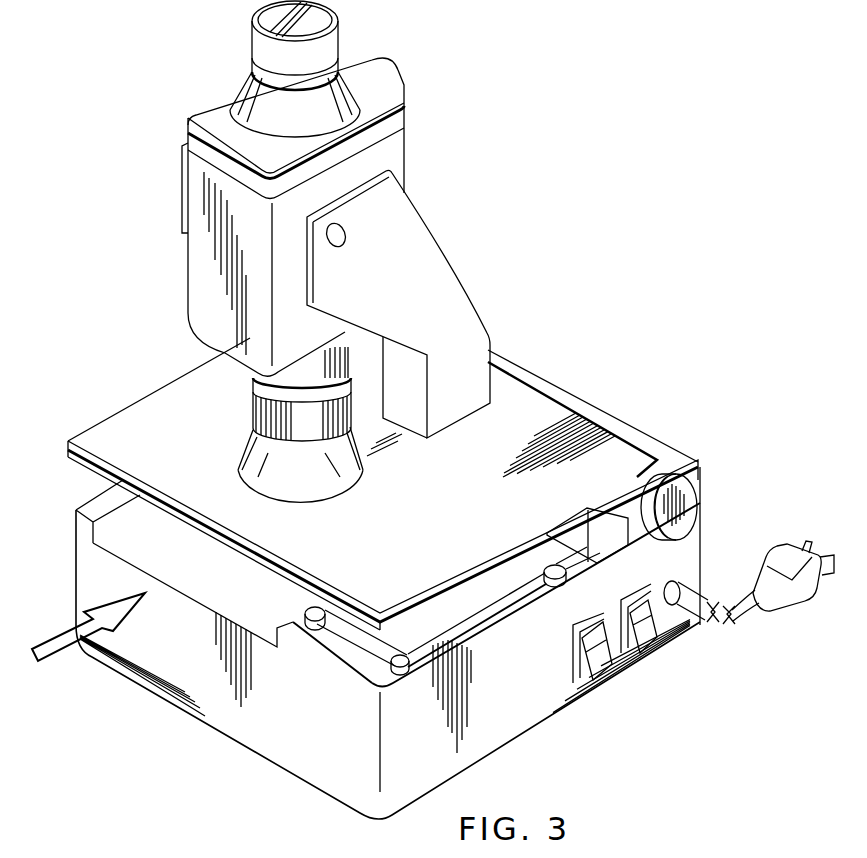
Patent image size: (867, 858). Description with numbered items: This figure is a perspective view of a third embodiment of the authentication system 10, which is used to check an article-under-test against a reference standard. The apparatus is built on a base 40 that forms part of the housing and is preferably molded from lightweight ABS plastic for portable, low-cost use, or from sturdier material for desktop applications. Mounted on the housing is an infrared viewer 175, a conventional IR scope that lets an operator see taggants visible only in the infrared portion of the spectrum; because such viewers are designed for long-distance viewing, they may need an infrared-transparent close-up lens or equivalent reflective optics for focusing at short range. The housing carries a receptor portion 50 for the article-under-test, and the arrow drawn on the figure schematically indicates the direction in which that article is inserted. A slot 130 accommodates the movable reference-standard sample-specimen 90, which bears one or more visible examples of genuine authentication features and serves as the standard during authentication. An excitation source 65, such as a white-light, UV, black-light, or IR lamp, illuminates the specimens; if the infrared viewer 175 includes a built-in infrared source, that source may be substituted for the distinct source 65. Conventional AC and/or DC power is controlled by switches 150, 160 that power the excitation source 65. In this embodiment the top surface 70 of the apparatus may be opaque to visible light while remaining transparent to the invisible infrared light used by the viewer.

The authentication system 10 is at (687, 548).
The base 40 is at (273, 742).
The receptor portion 50 is at (203, 582).
The excitation source 65 is at (686, 496).
The stage plate 70 is at (158, 388).
The reference-standard sample-specimen 90 is at (477, 587).
The slot 130 is at (598, 578).
The switch 150 is at (597, 665).
The switch 160 is at (647, 637).
The infrared viewer 175 is at (178, 130).